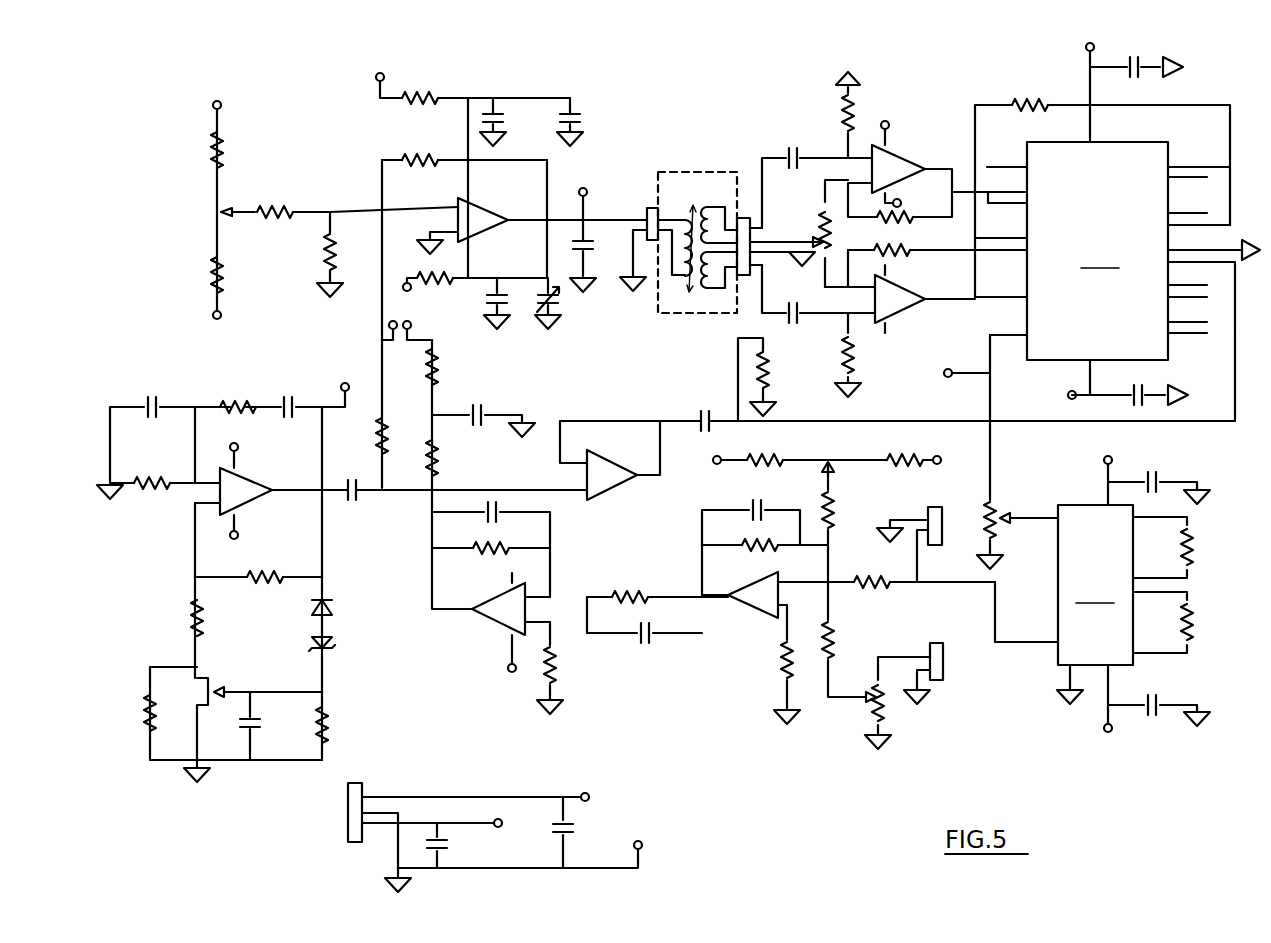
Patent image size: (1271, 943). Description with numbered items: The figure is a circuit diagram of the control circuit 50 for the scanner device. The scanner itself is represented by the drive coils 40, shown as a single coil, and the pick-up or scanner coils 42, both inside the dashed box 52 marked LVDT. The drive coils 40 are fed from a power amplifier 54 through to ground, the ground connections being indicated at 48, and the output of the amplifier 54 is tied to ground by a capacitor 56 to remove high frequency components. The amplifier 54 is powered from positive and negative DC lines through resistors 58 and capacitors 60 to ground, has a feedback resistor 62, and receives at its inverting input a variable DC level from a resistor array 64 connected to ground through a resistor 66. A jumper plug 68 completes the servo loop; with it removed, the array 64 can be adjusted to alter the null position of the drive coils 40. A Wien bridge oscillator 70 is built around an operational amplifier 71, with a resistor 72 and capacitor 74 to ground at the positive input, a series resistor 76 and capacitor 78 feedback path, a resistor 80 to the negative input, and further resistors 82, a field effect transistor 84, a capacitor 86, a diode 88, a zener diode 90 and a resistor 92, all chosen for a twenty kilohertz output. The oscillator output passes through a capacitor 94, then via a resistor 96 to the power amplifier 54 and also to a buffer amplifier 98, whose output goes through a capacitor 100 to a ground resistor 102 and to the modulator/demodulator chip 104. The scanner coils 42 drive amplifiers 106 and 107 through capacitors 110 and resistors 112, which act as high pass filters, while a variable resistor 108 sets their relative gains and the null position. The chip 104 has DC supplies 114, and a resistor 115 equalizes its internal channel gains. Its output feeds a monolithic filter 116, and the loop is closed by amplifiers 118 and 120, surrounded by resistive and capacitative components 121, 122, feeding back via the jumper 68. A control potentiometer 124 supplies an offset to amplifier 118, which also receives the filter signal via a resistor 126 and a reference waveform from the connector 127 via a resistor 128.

The drive coils 40 is at (684, 215).
The scanner coils 42 is at (709, 211).
The ground connections 48 is at (627, 288).
The circuit 50 is at (736, 96).
The dashed box 52 is at (683, 318).
The power amplifier 54 is at (490, 205).
The capacitor 56 is at (577, 245).
The resistors 58 is at (425, 95).
The capacitors 60 is at (500, 114).
The feedback resistor 62 is at (413, 153).
The resistor array 64 is at (212, 222).
The resistor 66 is at (333, 247).
The jumper plug 68 is at (425, 316).
The Wien bridge oscillator 70 is at (179, 571).
The operational amplifier 71 is at (245, 476).
The resistor 72 is at (154, 490).
The capacitor 74 is at (146, 400).
The resistor 76 is at (234, 400).
The capacitor 78 is at (292, 400).
The resistor 80 is at (272, 575).
The resistors 82 is at (200, 628).
The field effect transistor 84 is at (212, 680).
The capacitor 86 is at (255, 718).
The diode 88 is at (333, 606).
The zener diode 90 is at (336, 646).
The resistor 92 is at (327, 715).
The capacitor 94 is at (352, 500).
The resistor 96 is at (383, 418).
The buffer amplifier 98 is at (610, 488).
The capacitor 100 is at (703, 416).
The ground connection resistor 102 is at (766, 366).
The modulator/demodulator chip 104 is at (1117, 236).
The amplifier 106 is at (895, 153).
The amplifier 107 is at (895, 320).
The variable resistor 108 is at (822, 228).
The capacitors 110 is at (805, 143).
The resistors 112 is at (852, 110).
The DC supplies 114 is at (1094, 48).
The resistor 115 is at (1025, 98).
The monolithic filter 116 is at (1093, 594).
The amplifier 118 is at (750, 582).
The amplifier 120 is at (505, 627).
The resistive components 121 is at (490, 555).
The capacitative components 122 is at (505, 510).
The control potentiometer 124 is at (830, 456).
The resistor 126 is at (872, 590).
The connector 127 is at (955, 676).
The resistor 128 is at (836, 644).